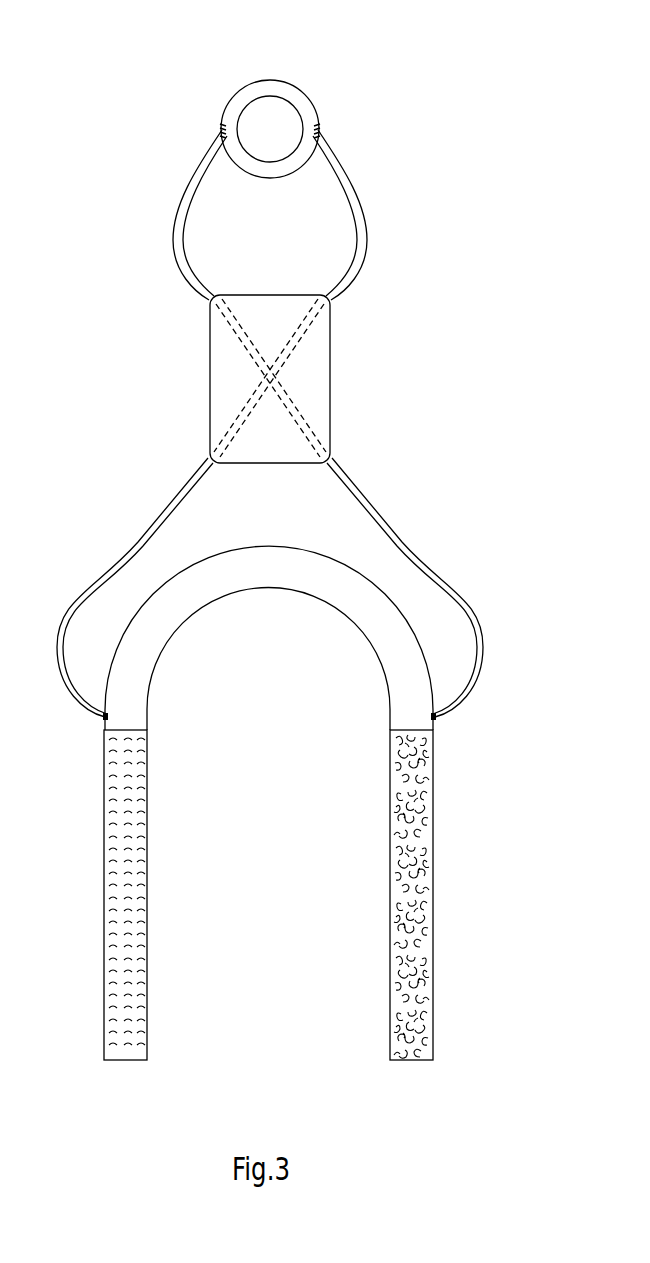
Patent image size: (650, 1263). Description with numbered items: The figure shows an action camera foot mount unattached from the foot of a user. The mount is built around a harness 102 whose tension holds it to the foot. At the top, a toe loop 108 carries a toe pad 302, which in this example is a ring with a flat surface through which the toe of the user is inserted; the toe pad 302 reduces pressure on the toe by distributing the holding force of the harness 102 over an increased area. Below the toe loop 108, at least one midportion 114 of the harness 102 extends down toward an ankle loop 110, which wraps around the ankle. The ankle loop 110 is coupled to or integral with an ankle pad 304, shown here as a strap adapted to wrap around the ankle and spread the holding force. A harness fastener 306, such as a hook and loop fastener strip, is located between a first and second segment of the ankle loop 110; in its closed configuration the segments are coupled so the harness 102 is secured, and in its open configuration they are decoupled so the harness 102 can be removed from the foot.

The harness 102 is at (133, 450).
The toe loop 108 is at (206, 57).
The ankle loop 110 is at (447, 749).
The midportion 114 is at (386, 523).
The toe pad 302 is at (267, 80).
The ankle pad 304 is at (106, 941).
The harness fastener 306 is at (377, 941).